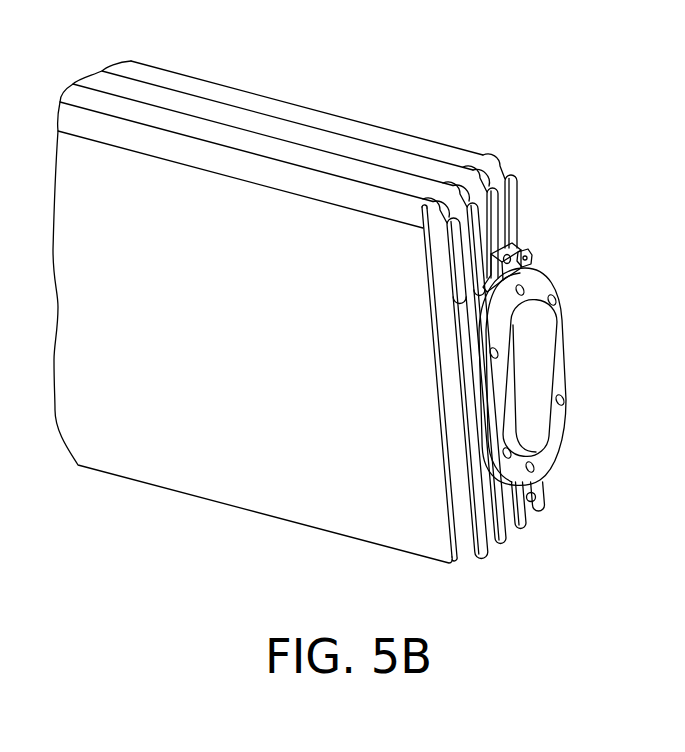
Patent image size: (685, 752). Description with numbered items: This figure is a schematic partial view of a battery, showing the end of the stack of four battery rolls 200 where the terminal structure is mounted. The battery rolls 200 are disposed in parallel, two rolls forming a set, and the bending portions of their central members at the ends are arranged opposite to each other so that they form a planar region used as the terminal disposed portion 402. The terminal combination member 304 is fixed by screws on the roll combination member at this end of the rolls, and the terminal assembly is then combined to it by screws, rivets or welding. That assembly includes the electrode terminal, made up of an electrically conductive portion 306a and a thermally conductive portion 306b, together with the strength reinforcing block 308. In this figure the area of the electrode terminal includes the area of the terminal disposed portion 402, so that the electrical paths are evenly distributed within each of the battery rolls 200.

The battery roll 200 is at (375, 132).
The terminal combination member 304 is at (500, 177).
The electrically conductive portion 306a is at (540, 367).
The thermally conductive portion 306b is at (533, 262).
The strength reinforcing block 308 is at (540, 284).
The terminal disposed portion 402 is at (528, 255).